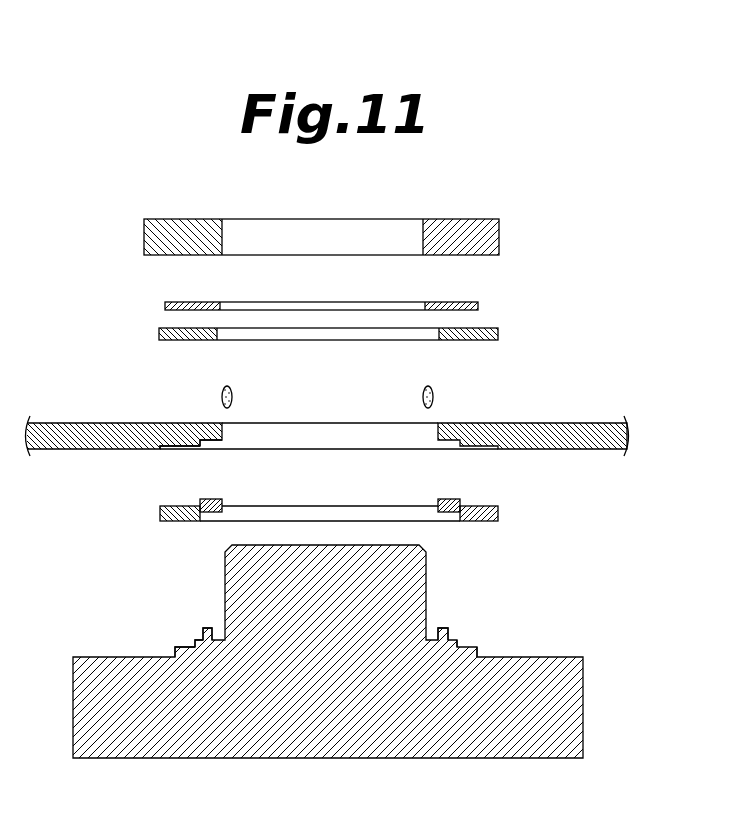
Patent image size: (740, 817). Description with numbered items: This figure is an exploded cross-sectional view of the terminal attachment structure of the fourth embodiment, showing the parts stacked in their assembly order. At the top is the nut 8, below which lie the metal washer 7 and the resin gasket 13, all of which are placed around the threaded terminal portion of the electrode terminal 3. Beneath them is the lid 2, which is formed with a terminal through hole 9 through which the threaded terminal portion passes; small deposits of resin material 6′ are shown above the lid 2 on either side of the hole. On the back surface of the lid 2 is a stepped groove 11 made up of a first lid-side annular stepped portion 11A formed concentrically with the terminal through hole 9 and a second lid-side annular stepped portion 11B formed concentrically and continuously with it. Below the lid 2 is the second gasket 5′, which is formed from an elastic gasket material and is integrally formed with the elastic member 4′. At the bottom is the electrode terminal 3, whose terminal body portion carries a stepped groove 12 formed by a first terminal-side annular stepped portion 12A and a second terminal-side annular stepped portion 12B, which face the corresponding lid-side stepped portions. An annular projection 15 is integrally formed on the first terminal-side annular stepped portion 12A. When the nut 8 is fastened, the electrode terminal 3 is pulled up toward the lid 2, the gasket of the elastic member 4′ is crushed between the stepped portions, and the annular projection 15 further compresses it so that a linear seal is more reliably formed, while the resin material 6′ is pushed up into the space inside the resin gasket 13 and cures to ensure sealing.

The nut 8 is at (500, 237).
The metal washer 7 is at (479, 306).
The resin gasket 13 is at (499, 335).
The resin material 6′ is at (222, 393).
The terminal through hole 9 is at (352, 434).
The lid 2 is at (327, 463).
The stepped groove 11 is at (137, 501).
The first lid-side annular stepped portion 11A is at (212, 441).
The second lid-side annular stepped portion 11B is at (168, 447).
The elastic member 4′ is at (450, 500).
The second gasket 5′ is at (363, 493).
The electrode terminal 3 is at (344, 651).
The stepped groove 12 is at (260, 622).
The first terminal-side annular stepped portion 12A is at (195, 640).
The second terminal-side annular stepped portion 12B is at (178, 647).
The annular projection 15 is at (206, 628).